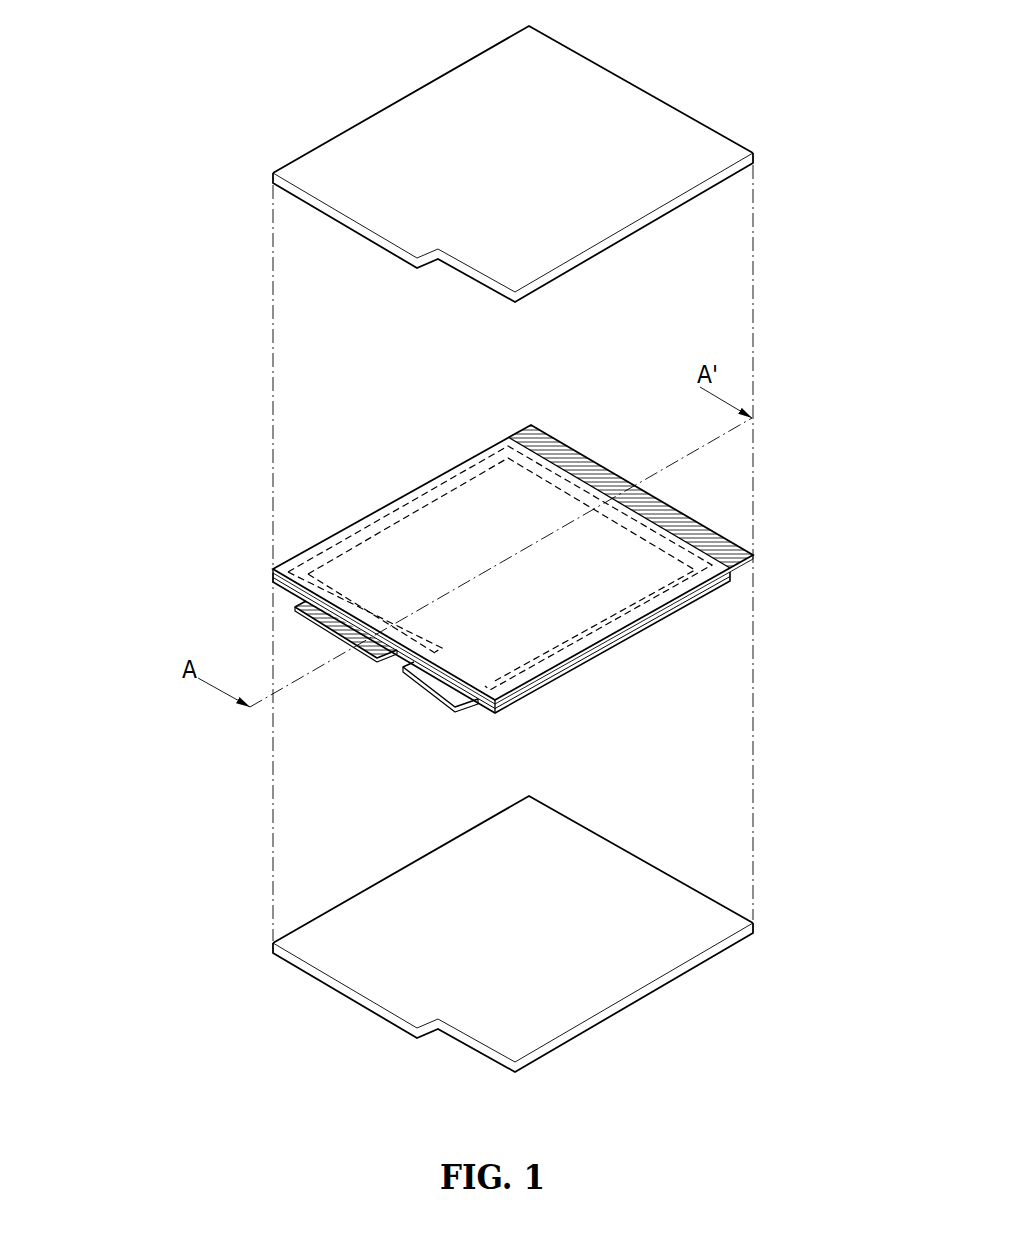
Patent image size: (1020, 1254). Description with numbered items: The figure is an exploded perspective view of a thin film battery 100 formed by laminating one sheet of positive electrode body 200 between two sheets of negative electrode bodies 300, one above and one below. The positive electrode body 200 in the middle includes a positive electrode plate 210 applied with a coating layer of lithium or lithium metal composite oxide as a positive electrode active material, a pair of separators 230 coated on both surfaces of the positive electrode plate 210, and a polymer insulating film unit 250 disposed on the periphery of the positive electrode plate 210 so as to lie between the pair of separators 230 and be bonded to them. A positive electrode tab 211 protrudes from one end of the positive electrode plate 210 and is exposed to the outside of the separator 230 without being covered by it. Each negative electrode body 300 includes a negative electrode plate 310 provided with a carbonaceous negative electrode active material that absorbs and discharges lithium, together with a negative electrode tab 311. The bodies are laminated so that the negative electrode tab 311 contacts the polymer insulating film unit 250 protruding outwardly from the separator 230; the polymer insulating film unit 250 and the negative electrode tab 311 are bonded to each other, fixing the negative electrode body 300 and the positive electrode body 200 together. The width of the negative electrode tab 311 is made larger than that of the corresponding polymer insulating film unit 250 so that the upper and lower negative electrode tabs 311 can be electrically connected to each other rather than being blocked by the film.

The thin film battery 100 is at (153, 148).
The positive electrode body 200 is at (368, 500).
The positive electrode plate 210 is at (553, 517).
The positive electrode tab 211 is at (438, 683).
The separator 230 is at (442, 470).
The polymer insulating film unit 250 is at (603, 465).
The negative electrode body 300 is at (324, 123).
The negative electrode plate 310 is at (448, 95).
The negative electrode tab 311 is at (373, 222).